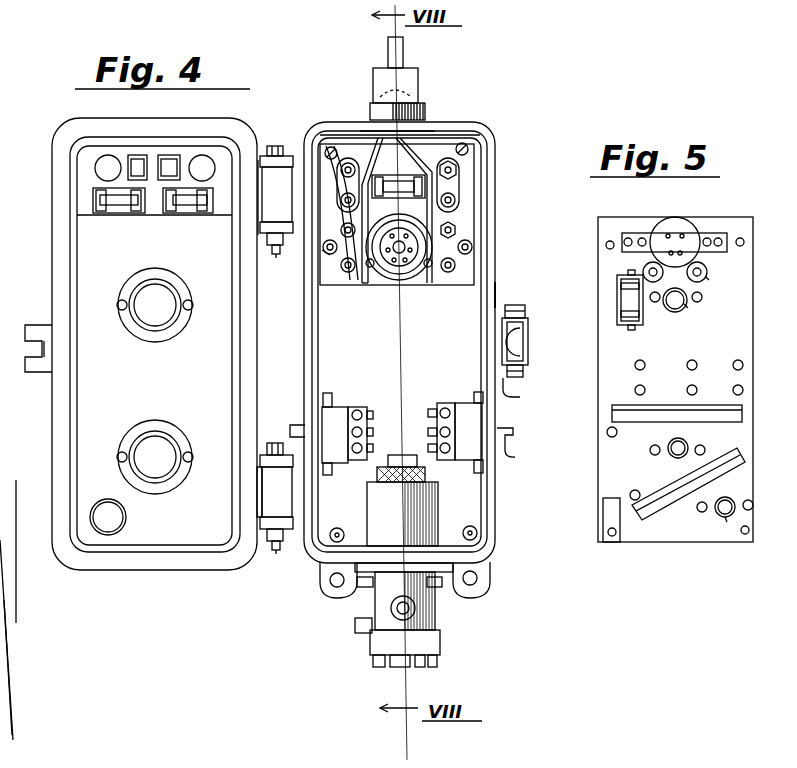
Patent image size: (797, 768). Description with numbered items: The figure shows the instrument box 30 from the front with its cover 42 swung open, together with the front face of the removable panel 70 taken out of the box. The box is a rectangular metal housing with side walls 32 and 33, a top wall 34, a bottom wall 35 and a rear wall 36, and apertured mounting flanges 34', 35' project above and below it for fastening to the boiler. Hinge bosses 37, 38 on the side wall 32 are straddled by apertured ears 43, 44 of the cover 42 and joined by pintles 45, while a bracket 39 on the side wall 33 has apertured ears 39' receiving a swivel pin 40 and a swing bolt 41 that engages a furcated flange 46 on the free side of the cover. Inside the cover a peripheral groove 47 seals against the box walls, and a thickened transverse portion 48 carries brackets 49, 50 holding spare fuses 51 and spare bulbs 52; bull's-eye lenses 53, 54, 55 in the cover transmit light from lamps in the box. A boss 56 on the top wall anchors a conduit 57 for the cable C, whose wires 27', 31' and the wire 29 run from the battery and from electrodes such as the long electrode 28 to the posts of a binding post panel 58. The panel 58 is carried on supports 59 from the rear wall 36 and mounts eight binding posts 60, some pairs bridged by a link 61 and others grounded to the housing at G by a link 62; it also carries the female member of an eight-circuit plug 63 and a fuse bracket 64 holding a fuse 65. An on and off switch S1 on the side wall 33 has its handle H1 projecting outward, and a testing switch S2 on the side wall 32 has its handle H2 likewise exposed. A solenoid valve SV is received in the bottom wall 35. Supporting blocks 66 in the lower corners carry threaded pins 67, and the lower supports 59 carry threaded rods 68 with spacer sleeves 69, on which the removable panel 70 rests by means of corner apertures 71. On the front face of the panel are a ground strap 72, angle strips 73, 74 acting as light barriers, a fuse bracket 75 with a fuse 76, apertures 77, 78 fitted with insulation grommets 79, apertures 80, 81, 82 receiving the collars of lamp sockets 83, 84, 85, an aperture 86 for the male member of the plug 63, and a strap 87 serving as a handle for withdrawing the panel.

In FIG. 4, the wire 27' is at (442, 296).
In FIG. 4, the long electrode 28 is at (366, 285).
In FIG. 4, the wire 29 is at (322, 250).
In FIG. 4, the instrument box 30 is at (316, 576).
In FIG. 4, the wire 31' is at (369, 188).
In FIG. 4, the side wall 32 is at (312, 336).
In FIG. 4, the side wall 33 is at (482, 273).
In FIG. 4, the top wall 34 is at (404, 110).
In FIG. 4, the mounting flange 34' is at (414, 101).
In FIG. 4, the bottom wall 35 is at (427, 577).
In FIG. 4, the mounting flange 35' is at (402, 606).
In FIG. 4, the rear wall 36 is at (482, 297).
In FIG. 4, the hinge boss 37 is at (270, 487).
In FIG. 4, the hinge boss 38 is at (267, 204).
In FIG. 4, the bracket 39 is at (527, 353).
In FIG. 4, the apertured ears 39' is at (537, 331).
In FIG. 4, the swivel pin 40 is at (527, 373).
In FIG. 4, the swing bolt 41 is at (528, 339).
In FIG. 4, the cover 42 is at (170, 571).
In FIG. 4, the apertured ears 43 is at (285, 460).
In FIG. 4, the apertured ears 44 is at (276, 232).
In FIG. 4, the pintles 45 is at (276, 257).
In FIG. 4, the furcated flange 46 is at (43, 360).
In FIG. 4, the peripheral groove 47 is at (65, 490).
In FIG. 4, the thickened transverse portion 48 is at (85, 188).
In FIG. 4, the bracket 49 is at (183, 216).
In FIG. 4, the bracket 50 is at (140, 165).
In FIG. 4, the spare fuses 51 is at (120, 215).
In FIG. 4, the spare bulbs 52 is at (110, 165).
In FIG. 4, the bull's-eye lens 53 is at (110, 517).
In FIG. 4, the bull's-eye lens 54 is at (160, 433).
In FIG. 4, the bull's-eye lens 55 is at (160, 318).
In FIG. 4, the boss 56 is at (381, 108).
In FIG. 4, the conduit 57 is at (385, 82).
In FIG. 4, the binding post panel 58 is at (369, 275).
In FIG. 4, the supports 59 is at (320, 150).
In FIG. 4, the binding posts 60 is at (341, 165).
In FIG. 4, the link 61 is at (472, 194).
In FIG. 4, the grounding link 62 is at (456, 180).
In FIG. 4, the eight-circuit plug 63 is at (402, 281).
In FIG. 5, the eight-circuit plug 63 is at (672, 231).
In FIG. 4, the fuse bracket 64 is at (407, 180).
In FIG. 4, the fuse 65 is at (390, 197).
In FIG. 4, the supporting blocks 66 is at (348, 531).
In FIG. 4, the threaded pins 67 is at (345, 535).
In FIG. 4, the threaded rods 68 is at (477, 262).
In FIG. 4, the spacer sleeves 69 is at (470, 242).
In FIG. 5, the removable panel 70 is at (694, 545).
In FIG. 5, the apertures 71 is at (745, 243).
In FIG. 5, the ground strap 72 is at (603, 522).
In FIG. 5, the angle strip 73 is at (688, 488).
In FIG. 5, the angle strip 74 is at (645, 423).
In FIG. 5, the fuse bracket 75 is at (619, 305).
In FIG. 5, the fuse 76 is at (636, 312).
In FIG. 5, the aperture 77 is at (707, 277).
In FIG. 5, the aperture 78 is at (642, 272).
In FIG. 5, the insulation grommets 79 is at (708, 272).
In FIG. 5, the lamp aperture 80 is at (688, 305).
In FIG. 5, the lamp aperture 81 is at (690, 446).
In FIG. 5, the lamp aperture 82 is at (733, 504).
In FIG. 5, the lamp socket 83 is at (675, 305).
In FIG. 5, the lamp socket 84 is at (675, 456).
In FIG. 5, the lamp socket 85 is at (726, 517).
In FIG. 5, the aperture 86 is at (686, 229).
In FIG. 5, the strap 87 is at (637, 240).
In FIG. 4, the cable C is at (403, 50).
In FIG. 4, the ground terminal G is at (455, 151).
In FIG. 4, the switch handle H1 is at (550, 435).
In FIG. 4, the operating handle H2 is at (304, 441).
In FIG. 4, the on and off switch S1 is at (466, 412).
In FIG. 4, the testing switch S2 is at (337, 418).
In FIG. 4, the solenoid valve SV is at (388, 638).